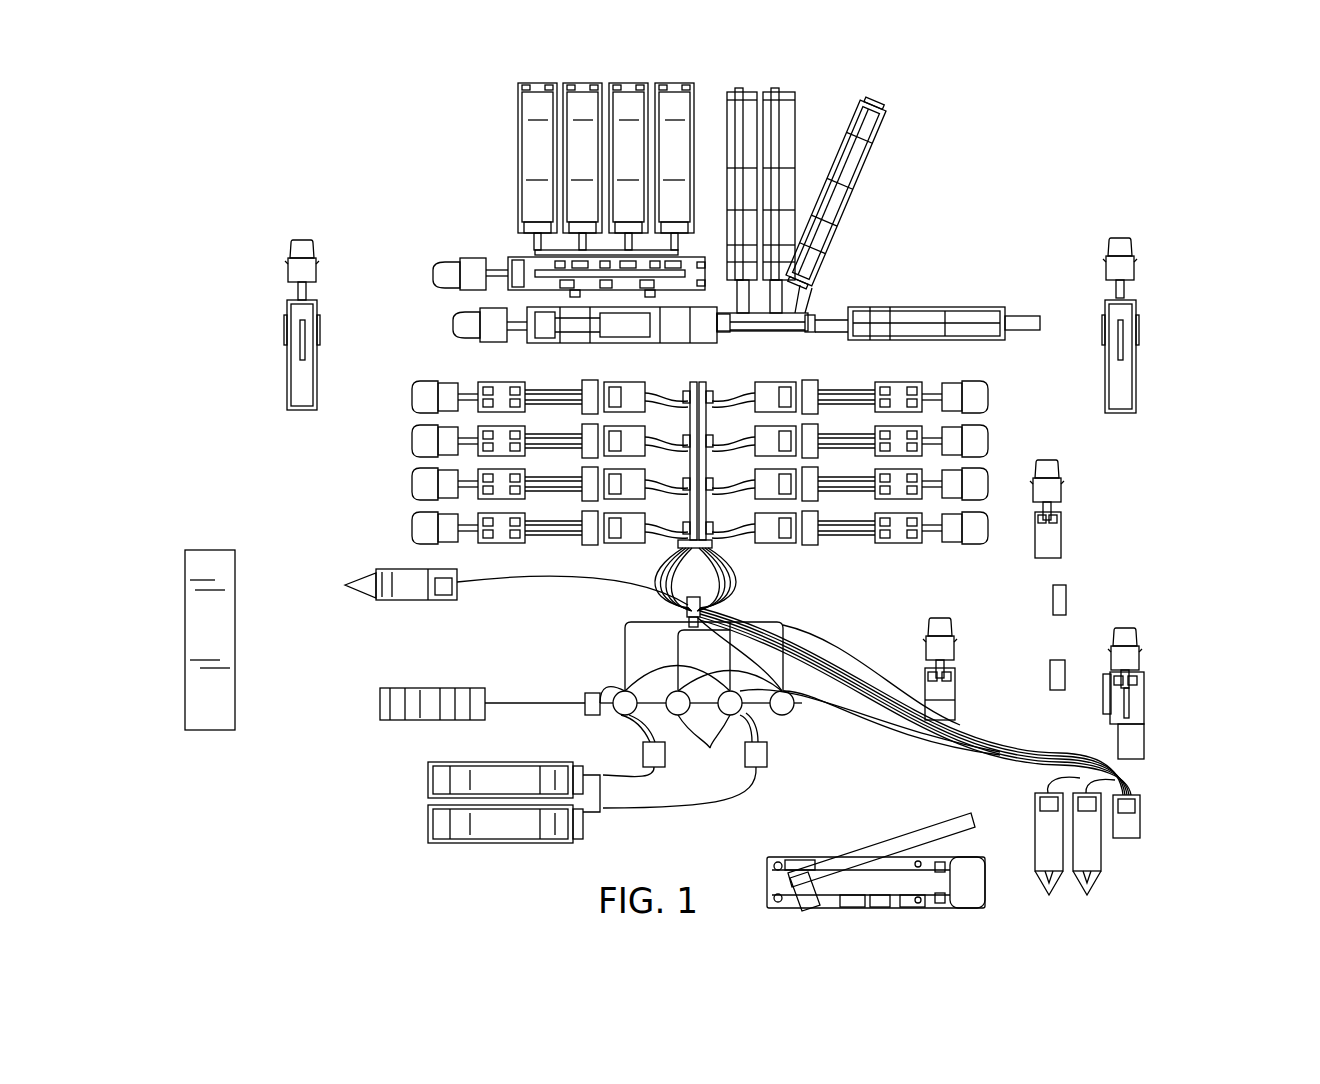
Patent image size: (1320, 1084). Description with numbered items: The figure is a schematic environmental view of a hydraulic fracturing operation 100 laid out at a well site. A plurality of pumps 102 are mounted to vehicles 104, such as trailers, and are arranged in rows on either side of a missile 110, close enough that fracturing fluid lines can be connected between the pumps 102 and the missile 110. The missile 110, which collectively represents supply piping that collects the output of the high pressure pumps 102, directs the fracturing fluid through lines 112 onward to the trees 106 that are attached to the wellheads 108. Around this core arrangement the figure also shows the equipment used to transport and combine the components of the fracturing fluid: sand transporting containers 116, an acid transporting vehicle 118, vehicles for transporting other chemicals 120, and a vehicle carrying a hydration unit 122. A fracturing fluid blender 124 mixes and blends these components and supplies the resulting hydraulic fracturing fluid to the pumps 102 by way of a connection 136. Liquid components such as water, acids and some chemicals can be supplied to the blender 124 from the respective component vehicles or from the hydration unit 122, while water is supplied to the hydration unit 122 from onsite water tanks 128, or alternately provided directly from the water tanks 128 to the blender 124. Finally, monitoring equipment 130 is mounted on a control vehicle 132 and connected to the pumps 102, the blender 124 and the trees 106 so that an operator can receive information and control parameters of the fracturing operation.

The hydraulic fracturing operation 100 is at (1052, 176).
The pumps 102 is at (810, 386).
The vehicles 104 is at (741, 443).
The trees 106 is at (627, 690).
The wellheads 108 is at (800, 712).
The missile 110 is at (703, 382).
The tubing bundle 112 is at (700, 588).
The sand transporting containers 116 is at (870, 168).
The acid transporting vehicle 118 is at (1138, 352).
The vehicles for transporting other chemicals 120 is at (320, 386).
The hydration unit 122 is at (515, 240).
The fracturing fluid blender 124 is at (722, 335).
The water tanks 128 is at (522, 152).
The monitoring equipment 130 is at (1145, 696).
The control vehicle 132 is at (1161, 665).
The connector pipe 136 is at (808, 304).